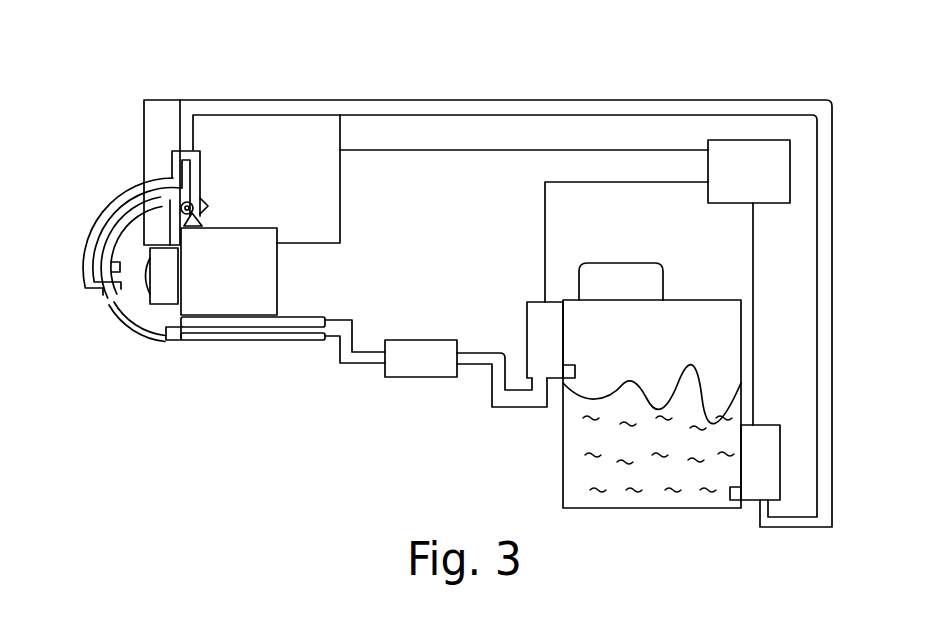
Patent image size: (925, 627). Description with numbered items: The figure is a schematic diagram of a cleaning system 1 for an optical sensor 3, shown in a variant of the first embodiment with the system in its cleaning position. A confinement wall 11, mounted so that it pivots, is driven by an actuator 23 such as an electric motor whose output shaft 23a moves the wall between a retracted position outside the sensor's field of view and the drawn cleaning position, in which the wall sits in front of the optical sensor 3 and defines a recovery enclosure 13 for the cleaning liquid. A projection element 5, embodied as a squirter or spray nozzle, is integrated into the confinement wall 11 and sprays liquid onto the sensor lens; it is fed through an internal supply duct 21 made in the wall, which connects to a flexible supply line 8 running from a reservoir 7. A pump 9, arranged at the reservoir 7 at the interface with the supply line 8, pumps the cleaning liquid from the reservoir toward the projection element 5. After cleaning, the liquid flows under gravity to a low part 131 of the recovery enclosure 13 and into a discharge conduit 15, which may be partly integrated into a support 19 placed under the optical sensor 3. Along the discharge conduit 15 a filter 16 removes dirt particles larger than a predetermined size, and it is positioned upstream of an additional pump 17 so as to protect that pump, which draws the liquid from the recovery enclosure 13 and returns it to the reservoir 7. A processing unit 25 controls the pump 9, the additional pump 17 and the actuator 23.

The cleaning system 1 is at (352, 412).
The optical sensor 3 is at (267, 262).
The projection element 5 is at (82, 265).
The reservoir 7 is at (560, 458).
The supply line 8 is at (722, 101).
The pump 9 is at (760, 430).
The confinement wall 11 is at (115, 304).
The recovery enclosure 13 is at (128, 338).
The low part of the recovery enclosure 131 is at (166, 345).
The discharge conduit 15 is at (482, 393).
The filter 16 is at (427, 340).
The additional pump 17 is at (537, 303).
The support 19 is at (241, 341).
The internal supply duct 21 is at (115, 215).
The actuator 23 is at (322, 191).
The output shaft 23a is at (167, 190).
The processing unit 25 is at (565, 282).